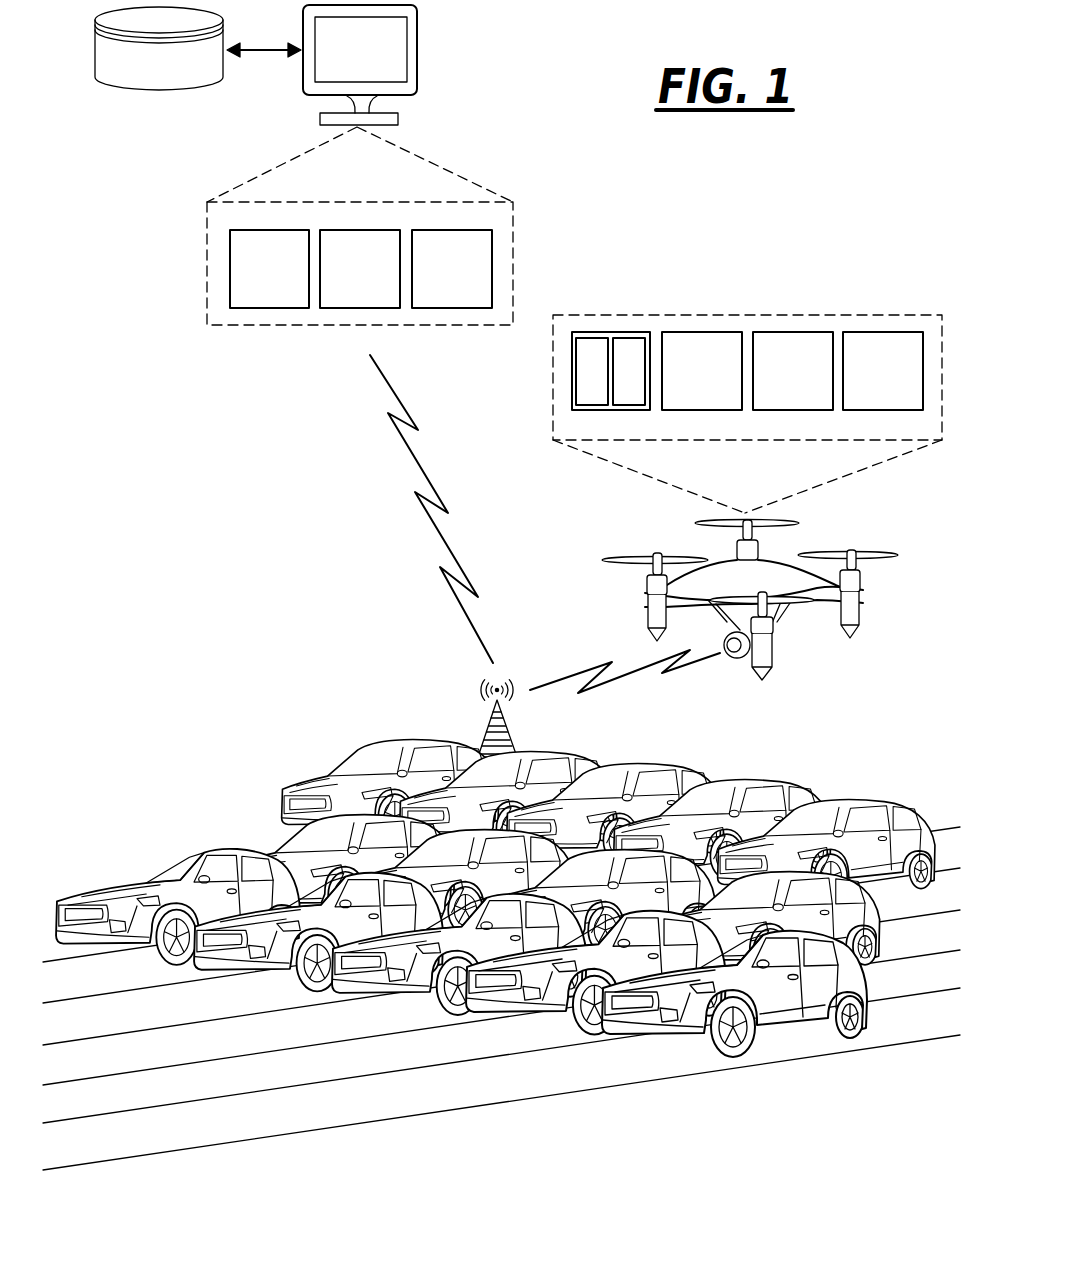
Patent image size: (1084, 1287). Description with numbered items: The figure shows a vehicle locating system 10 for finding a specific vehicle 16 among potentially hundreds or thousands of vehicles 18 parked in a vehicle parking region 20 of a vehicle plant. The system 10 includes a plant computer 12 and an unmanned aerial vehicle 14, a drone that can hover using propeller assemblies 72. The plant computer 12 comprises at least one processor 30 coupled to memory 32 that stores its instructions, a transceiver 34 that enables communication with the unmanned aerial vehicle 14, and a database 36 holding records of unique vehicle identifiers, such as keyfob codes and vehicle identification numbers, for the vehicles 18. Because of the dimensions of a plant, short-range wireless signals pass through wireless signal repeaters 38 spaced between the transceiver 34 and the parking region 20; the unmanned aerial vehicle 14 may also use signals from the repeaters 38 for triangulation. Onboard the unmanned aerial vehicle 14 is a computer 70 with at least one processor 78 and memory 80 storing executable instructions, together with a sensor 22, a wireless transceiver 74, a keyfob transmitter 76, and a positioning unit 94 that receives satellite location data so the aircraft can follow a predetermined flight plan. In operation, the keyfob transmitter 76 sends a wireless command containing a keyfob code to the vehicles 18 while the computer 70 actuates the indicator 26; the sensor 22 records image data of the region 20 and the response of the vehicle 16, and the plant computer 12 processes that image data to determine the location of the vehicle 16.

The vehicle locating system 10 is at (192, 602).
The plant computer 12 is at (360, 164).
The unmanned aerial vehicle 14 is at (747, 516).
The specific vehicle 16 is at (400, 998).
The vehicles 18 is at (495, 905).
The vehicle parking region 20 is at (140, 1062).
The sensor 22 is at (746, 662).
The UAV indicator 26 is at (728, 652).
The processor 30 is at (278, 281).
The memory 32 is at (369, 281).
The transceiver 34 is at (460, 281).
The database 36 is at (166, 80).
The wireless signal repeaters 38 is at (514, 745).
The computer 70 is at (628, 392).
The propeller assemblies 72 is at (762, 548).
The wireless transceiver 74 is at (711, 381).
The keyfob transmitter 76 is at (802, 381).
The processor 78 is at (602, 381).
The memory 80 is at (639, 381).
The positioning unit 94 is at (892, 381).